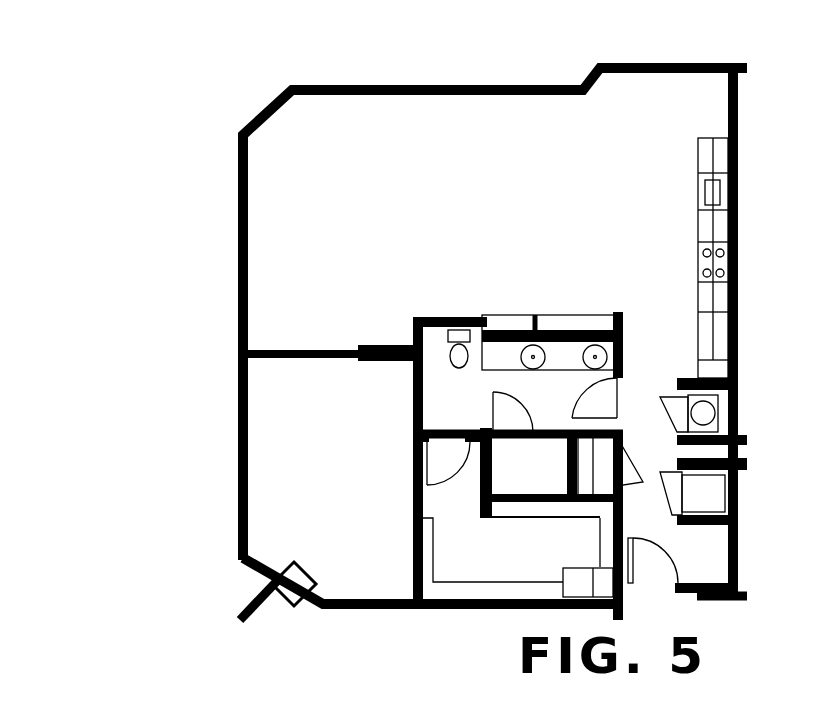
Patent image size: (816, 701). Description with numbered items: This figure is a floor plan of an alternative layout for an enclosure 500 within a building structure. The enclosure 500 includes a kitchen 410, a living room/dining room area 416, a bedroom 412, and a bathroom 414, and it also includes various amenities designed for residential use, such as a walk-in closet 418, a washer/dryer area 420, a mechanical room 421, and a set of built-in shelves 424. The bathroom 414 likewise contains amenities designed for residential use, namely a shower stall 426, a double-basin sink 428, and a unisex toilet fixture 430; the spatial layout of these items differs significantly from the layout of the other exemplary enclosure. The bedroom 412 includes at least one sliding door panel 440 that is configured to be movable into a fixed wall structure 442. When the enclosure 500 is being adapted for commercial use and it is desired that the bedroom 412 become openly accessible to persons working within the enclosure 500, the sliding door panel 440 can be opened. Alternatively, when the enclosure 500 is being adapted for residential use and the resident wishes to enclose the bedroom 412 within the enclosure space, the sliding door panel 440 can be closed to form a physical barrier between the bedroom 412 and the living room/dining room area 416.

The enclosure 500 is at (74, 49).
The kitchen 410 is at (700, 140).
The bedroom 412 is at (331, 430).
The bathroom 414 is at (536, 439).
The living room/dining room area 416 is at (437, 163).
The walk-in closet 418 is at (555, 527).
The washer/dryer area 420 is at (722, 498).
The mechanical room 421 is at (703, 413).
The set of built-in shelves 424 is at (490, 325).
The shower stall 426 is at (531, 473).
The double-basin sink 428 is at (597, 362).
The unisex toilet fixture 430 is at (445, 333).
The sliding door panel 440 is at (320, 350).
The fixed wall structure 442 is at (380, 348).